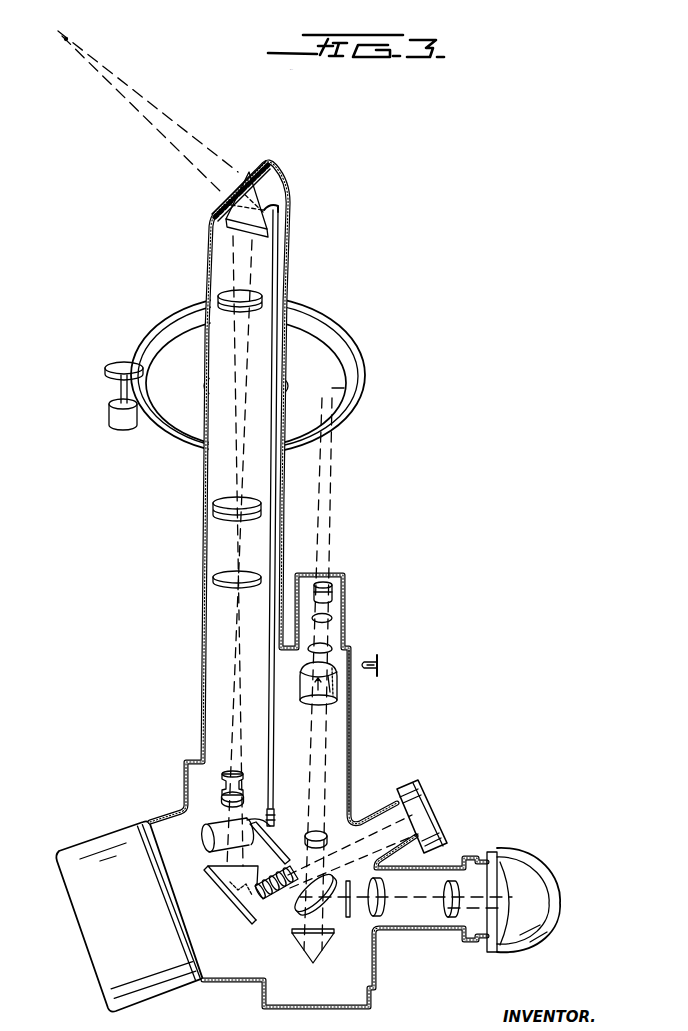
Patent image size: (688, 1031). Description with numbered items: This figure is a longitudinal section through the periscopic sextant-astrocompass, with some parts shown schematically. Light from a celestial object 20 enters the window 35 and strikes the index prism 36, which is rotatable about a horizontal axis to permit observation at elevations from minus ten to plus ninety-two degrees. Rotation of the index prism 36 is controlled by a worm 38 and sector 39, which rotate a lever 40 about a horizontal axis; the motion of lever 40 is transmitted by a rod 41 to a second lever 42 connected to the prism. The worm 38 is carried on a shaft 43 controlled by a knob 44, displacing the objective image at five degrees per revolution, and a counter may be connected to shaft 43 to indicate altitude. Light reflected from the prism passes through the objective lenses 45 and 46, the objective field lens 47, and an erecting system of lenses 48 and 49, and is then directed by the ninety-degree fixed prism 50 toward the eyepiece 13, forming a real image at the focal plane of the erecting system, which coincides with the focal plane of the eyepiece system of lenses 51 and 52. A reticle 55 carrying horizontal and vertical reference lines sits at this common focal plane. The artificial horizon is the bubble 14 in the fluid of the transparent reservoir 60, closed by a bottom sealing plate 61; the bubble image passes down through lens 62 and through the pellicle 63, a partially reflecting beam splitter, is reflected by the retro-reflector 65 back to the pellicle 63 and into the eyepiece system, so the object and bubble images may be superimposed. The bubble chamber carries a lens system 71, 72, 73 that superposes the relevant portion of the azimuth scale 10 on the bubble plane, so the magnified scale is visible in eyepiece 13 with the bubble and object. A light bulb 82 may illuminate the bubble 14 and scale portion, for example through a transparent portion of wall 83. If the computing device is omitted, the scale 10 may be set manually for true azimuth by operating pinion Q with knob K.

The azimuth scale 10 is at (321, 357).
The eyepiece 13 is at (540, 856).
The bubble 14 is at (322, 674).
The object 20 is at (63, 38).
The window 35 is at (243, 168).
The index prism 36 is at (244, 186).
The worm 38 is at (265, 904).
The sector 39 is at (270, 860).
The lever 40 is at (275, 820).
The rod 41 is at (274, 748).
The lever 42 is at (278, 204).
The shaft 43 is at (362, 837).
The knob 44 is at (420, 790).
The objective lens 45 is at (263, 298).
The objective lens 46 is at (263, 500).
The objective field lens 47 is at (250, 577).
The erecting system lens 48 is at (222, 780).
The erecting system lens 49 is at (221, 800).
The 90° fixed prism 50 is at (218, 882).
The eyepiece lens 51 is at (384, 908).
The eyepiece lens 52 is at (447, 911).
The reticle 55 is at (349, 917).
The transparent reservoir 60 is at (338, 671).
The bottom sealing plate 61 is at (340, 690).
The lens 62 is at (325, 833).
The pellicle 63 is at (329, 881).
The retro-reflector 65 is at (321, 958).
The lens system lens 71 is at (336, 597).
The lens system lens 72 is at (334, 617).
The lens system lens 73 is at (332, 645).
The light bulb 82 is at (379, 664).
The wall 83 is at (352, 714).
The pinion Q is at (123, 361).
The knob K is at (124, 430).